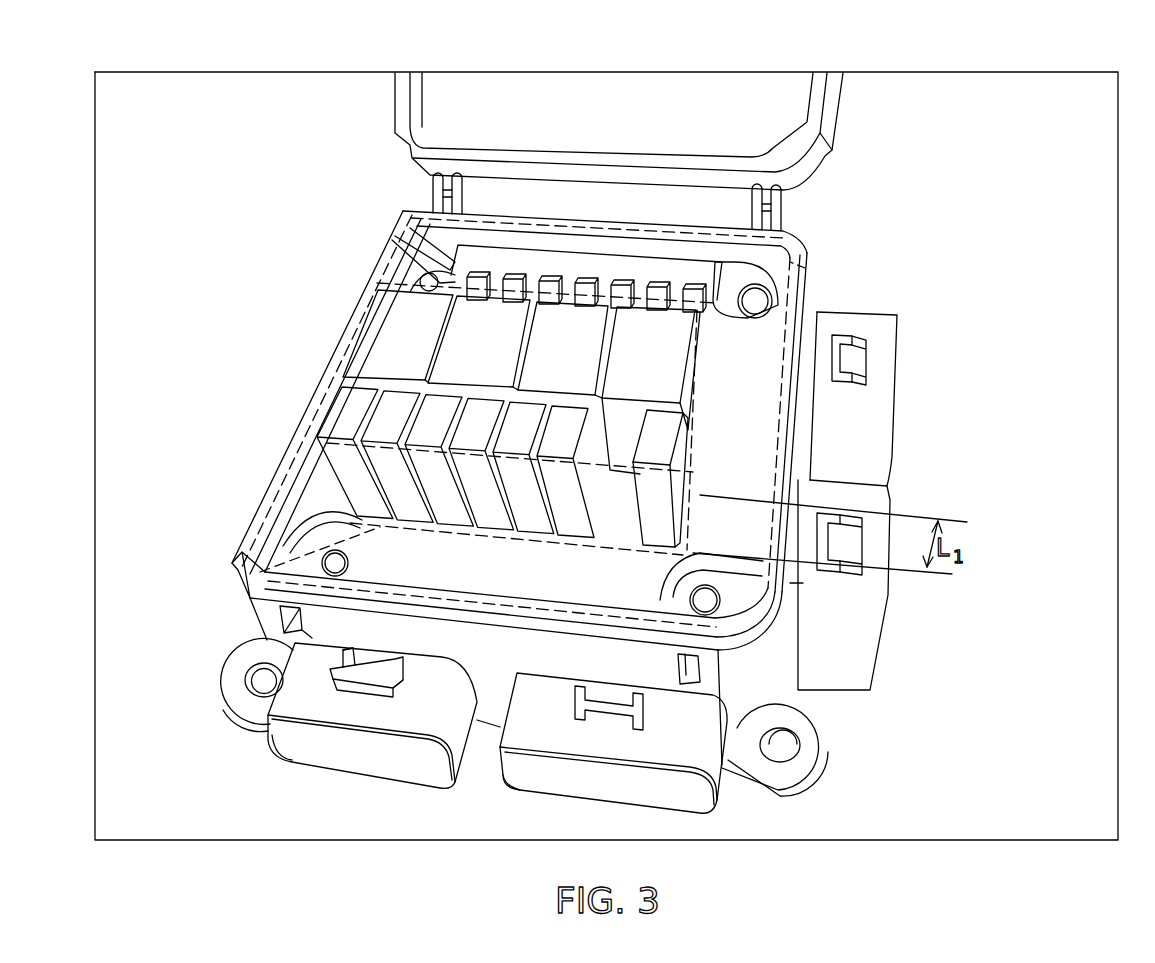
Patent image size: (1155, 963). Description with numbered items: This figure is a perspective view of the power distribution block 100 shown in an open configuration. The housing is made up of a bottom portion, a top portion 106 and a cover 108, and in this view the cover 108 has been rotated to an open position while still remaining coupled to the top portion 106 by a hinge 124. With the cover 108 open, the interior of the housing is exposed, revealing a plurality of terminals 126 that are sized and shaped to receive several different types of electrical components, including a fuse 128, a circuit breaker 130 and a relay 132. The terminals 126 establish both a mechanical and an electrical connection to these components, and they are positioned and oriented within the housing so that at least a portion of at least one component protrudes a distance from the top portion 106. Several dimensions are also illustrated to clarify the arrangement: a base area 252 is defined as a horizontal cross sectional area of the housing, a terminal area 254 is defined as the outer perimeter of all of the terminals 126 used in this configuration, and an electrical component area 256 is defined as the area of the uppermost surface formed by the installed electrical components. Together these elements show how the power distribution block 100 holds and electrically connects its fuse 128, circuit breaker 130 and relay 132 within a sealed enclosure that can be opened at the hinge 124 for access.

The power distribution block 100 is at (322, 48).
The top portion 106 is at (250, 598).
The cover 108 is at (810, 156).
The hinge 124 is at (430, 194).
The terminals 126 is at (677, 487).
The fuse 128 is at (443, 277).
The circuit breaker 130 is at (342, 410).
The relay 132 is at (383, 327).
The base area 252 is at (803, 583).
The terminal area 254 is at (258, 572).
The electrical component area 256 is at (805, 268).